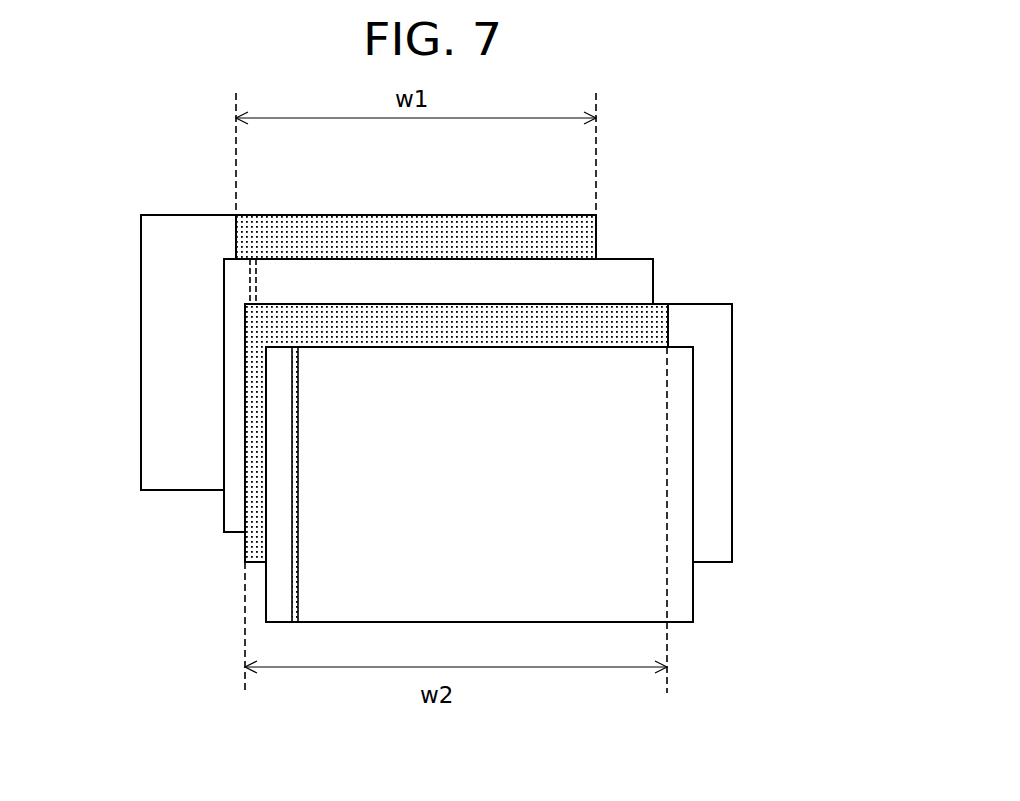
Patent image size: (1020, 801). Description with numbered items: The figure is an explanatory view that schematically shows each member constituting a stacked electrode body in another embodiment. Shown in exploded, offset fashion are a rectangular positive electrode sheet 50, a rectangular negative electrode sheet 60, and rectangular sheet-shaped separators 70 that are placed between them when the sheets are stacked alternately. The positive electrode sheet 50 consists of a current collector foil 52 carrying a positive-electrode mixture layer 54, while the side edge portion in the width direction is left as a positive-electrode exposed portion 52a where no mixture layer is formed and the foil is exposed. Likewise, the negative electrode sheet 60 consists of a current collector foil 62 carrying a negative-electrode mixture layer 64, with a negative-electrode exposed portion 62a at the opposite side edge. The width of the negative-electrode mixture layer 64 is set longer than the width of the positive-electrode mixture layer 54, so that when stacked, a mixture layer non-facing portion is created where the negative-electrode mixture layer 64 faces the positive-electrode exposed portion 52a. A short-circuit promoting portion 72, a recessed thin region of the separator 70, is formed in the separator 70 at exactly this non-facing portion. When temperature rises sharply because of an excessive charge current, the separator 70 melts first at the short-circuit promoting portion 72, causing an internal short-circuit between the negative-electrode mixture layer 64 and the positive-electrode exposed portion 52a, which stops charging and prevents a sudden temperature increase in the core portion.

The positive electrode sheet 50 is at (326, 317).
The current collector foil 52 is at (175, 213).
The positive-electrode exposed portion 52a is at (167, 300).
The positive-electrode mixture layer 54 is at (345, 225).
The negative electrode sheet 60 is at (495, 416).
The current collector foil 62 is at (733, 430).
The negative-electrode exposed portion 62a is at (720, 516).
The negative-electrode mixture layer 64 is at (245, 548).
The separator 70 is at (478, 389).
The short-circuit promoting portion 72 is at (266, 266).